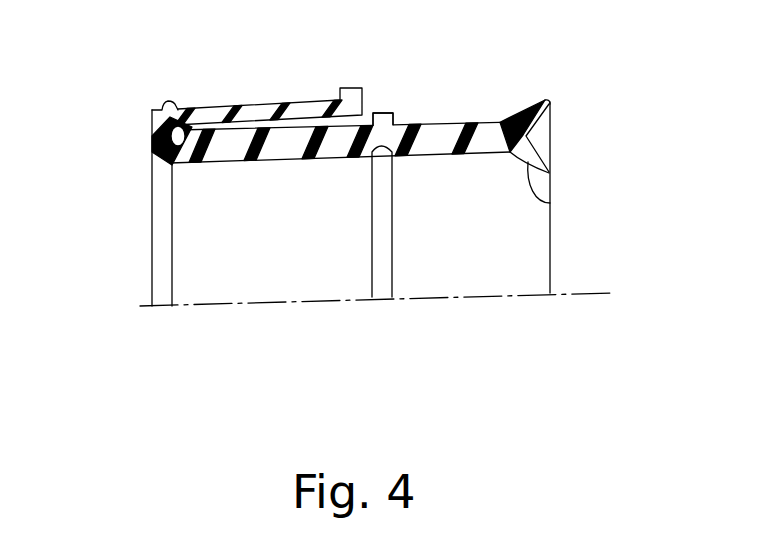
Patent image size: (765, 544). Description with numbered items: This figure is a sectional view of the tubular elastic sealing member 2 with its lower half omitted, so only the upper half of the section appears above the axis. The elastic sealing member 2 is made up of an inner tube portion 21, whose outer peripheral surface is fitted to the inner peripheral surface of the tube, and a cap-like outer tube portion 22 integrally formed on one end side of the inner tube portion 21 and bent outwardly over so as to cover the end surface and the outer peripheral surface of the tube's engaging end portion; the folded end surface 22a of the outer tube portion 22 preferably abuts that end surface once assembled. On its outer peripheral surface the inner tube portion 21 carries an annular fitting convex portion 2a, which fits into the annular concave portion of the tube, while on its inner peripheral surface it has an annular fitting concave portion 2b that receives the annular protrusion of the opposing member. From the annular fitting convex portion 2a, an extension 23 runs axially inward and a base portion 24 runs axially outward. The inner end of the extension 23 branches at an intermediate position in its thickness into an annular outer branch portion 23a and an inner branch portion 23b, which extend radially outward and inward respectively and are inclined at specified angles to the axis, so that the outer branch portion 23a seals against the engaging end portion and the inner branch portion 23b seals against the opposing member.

The tubular elastic sealing member 2 is at (352, 192).
The inner tube portion 21 is at (227, 162).
The outer tube portion 22 is at (258, 112).
The folded end surface 22a is at (153, 136).
The annular fitting convex portion 2a is at (385, 113).
The annular fitting concave portion 2b is at (380, 168).
The extension 23 is at (483, 142).
The outer branch portion 23a is at (539, 98).
The inner branch portion 23b is at (550, 203).
The base portion 24 is at (293, 145).